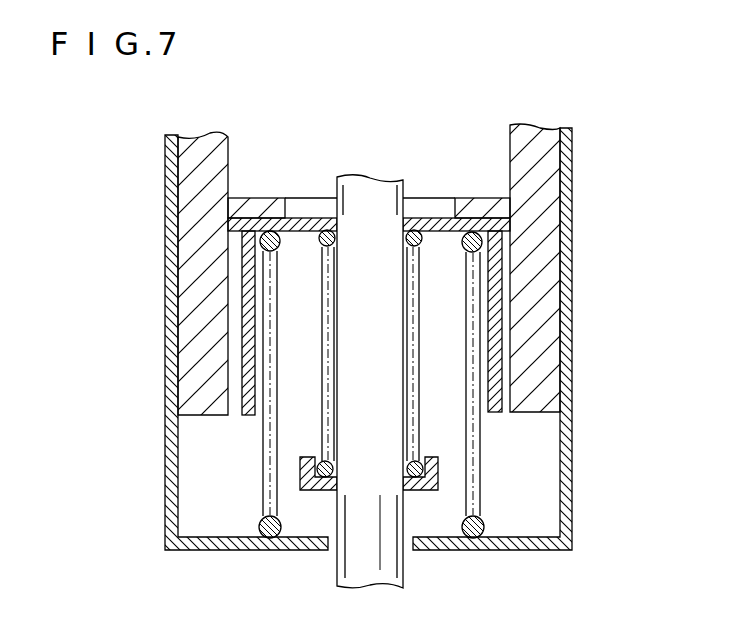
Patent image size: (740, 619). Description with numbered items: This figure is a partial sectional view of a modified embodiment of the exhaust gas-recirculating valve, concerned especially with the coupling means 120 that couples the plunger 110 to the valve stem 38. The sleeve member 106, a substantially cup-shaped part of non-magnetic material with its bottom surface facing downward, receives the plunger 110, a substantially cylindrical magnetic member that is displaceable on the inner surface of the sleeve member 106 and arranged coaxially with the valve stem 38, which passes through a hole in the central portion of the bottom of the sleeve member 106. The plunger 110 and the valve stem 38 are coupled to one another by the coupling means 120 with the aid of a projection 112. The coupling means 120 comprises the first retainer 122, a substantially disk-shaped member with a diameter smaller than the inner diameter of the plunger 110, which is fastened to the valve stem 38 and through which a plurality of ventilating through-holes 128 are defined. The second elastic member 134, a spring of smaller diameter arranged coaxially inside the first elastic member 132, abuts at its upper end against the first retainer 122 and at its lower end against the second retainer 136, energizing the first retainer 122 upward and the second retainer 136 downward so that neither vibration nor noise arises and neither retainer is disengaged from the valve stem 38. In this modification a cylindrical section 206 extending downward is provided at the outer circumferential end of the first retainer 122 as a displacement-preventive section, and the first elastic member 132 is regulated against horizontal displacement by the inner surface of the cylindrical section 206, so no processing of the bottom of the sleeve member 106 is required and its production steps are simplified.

The valve stem 38 is at (360, 195).
The sleeve member 106 is at (572, 355).
The plunger 110 is at (532, 138).
The projection 112 is at (495, 198).
The coupling means 120 is at (309, 170).
The first retainer 122 is at (473, 220).
The ventilating through-holes 128 is at (452, 247).
The first elastic member 132 is at (480, 532).
The second elastic member 134 is at (318, 248).
The second retainer 136 is at (438, 470).
The cylindrical section 206 is at (497, 412).